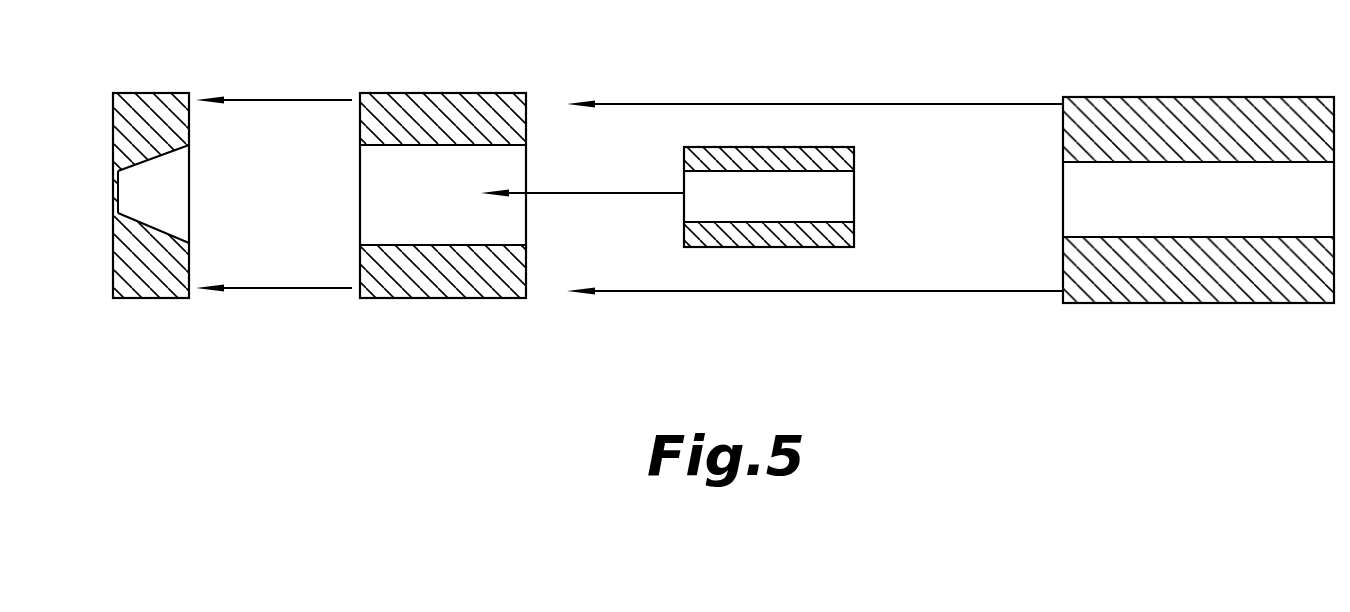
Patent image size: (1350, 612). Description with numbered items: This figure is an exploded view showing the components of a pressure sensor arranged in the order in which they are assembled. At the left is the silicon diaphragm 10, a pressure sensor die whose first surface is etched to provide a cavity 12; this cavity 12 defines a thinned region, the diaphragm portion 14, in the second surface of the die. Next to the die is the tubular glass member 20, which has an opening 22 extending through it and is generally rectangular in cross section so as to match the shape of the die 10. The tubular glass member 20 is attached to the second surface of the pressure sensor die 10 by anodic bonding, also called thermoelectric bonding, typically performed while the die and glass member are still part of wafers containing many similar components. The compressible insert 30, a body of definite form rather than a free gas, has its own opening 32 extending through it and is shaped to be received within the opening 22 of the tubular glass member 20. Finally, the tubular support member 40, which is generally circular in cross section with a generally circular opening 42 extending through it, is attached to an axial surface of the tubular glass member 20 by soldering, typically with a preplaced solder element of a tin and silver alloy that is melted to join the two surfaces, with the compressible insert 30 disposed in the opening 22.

The silicon diaphragm 10 is at (152, 103).
The cavity 12 is at (173, 199).
The diaphragm portion 14 is at (112, 185).
The tubular glass member 20 is at (452, 107).
The opening 22 is at (370, 220).
The compressible insert 30 is at (851, 233).
The opening 32 is at (843, 197).
The tubular support member 40 is at (1077, 127).
The opening 42 is at (1079, 182).